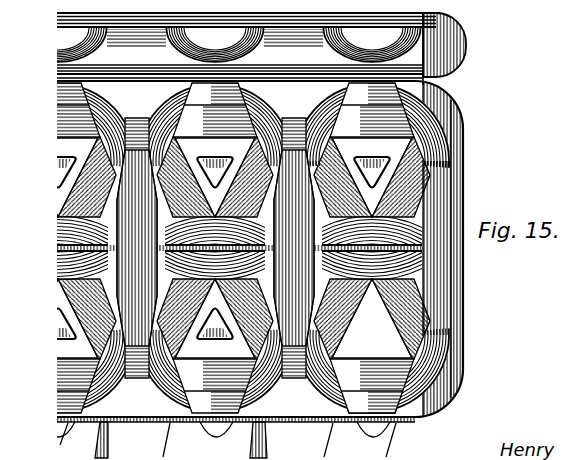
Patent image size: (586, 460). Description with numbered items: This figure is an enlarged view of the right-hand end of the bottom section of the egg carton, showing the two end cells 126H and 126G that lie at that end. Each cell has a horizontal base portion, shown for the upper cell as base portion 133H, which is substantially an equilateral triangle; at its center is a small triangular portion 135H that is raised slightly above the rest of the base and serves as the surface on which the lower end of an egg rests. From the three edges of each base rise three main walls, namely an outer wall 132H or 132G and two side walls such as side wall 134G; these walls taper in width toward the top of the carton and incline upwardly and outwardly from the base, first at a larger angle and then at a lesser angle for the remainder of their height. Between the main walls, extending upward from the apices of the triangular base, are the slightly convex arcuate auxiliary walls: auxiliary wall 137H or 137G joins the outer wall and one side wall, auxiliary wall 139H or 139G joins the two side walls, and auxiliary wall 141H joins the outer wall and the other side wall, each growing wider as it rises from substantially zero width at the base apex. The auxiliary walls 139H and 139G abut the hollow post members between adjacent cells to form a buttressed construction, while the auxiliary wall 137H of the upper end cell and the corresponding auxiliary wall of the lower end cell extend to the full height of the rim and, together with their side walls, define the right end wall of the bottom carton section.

The end cell 126H is at (444, 107).
The outer wall 132H is at (394, 108).
The base portion 133H is at (402, 181).
The small triangular portion 135H is at (392, 165).
The auxiliary wall 137H is at (438, 132).
The auxiliary wall 139H is at (326, 195).
The auxiliary wall 141H is at (327, 109).
The end cell 126G is at (461, 342).
The outer wall 132G is at (418, 410).
The side wall 134G is at (320, 298).
The auxiliary wall 137G is at (311, 421).
The auxiliary wall 139G is at (320, 254).